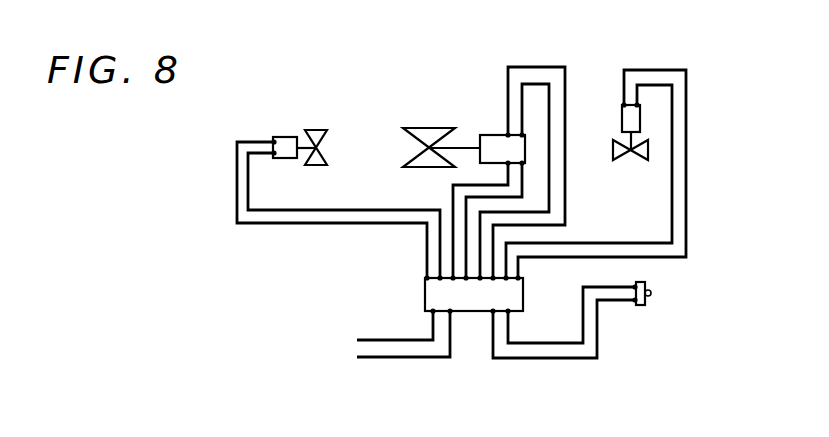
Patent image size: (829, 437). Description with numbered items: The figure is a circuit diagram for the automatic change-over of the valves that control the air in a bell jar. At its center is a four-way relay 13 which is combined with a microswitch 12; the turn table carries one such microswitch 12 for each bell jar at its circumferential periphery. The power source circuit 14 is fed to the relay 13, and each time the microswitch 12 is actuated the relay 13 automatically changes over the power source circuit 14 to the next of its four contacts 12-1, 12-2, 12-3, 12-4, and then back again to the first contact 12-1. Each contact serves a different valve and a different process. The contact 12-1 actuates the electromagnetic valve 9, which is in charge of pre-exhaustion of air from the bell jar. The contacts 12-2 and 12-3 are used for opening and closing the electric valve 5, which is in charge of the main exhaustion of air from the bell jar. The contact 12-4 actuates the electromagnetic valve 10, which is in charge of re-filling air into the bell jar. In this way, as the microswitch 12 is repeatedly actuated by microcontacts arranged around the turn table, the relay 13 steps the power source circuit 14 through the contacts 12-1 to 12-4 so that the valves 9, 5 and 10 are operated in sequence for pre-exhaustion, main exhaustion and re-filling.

The electric valve 5 is at (425, 128).
The electromagnetic valve 9 is at (315, 130).
The electromagnetic valve 10 is at (632, 161).
The microswitch 12 is at (650, 303).
The contact 12-1 is at (437, 274).
The contact 12-2 is at (462, 282).
The contact 12-3 is at (486, 279).
The contact 12-4 is at (511, 279).
The four-way relay 13 is at (475, 313).
The power source circuit 14 is at (357, 348).